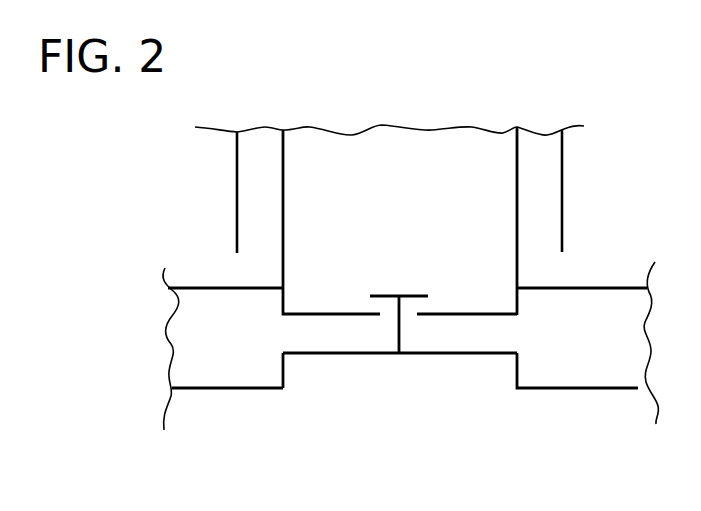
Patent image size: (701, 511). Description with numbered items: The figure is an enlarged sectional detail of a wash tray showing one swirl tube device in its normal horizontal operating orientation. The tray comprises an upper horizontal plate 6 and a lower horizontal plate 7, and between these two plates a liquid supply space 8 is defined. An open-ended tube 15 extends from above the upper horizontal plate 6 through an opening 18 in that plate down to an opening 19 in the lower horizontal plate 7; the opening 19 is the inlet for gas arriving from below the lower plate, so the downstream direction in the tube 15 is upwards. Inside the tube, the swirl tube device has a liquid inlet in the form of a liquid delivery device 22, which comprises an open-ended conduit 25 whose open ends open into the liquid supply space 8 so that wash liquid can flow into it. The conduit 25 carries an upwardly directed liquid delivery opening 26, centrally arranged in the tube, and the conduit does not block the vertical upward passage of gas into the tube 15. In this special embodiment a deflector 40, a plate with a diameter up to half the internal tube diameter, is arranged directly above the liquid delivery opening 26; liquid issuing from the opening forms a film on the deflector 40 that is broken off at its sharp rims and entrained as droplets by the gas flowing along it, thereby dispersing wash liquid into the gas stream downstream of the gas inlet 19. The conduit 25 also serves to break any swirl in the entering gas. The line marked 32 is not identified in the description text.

The upper horizontal plate 6 is at (210, 287).
The lower horizontal plate 7 is at (228, 389).
The liquid supply space 8 is at (240, 352).
The open-ended tube 15 is at (284, 193).
The opening 18 is at (515, 287).
The opening 19 is at (509, 388).
The liquid delivery device 22 is at (431, 355).
The open-ended conduit 25 is at (340, 327).
The liquid delivery opening 26 is at (405, 313).
The inner wall 32 is at (235, 182).
The deflector 40 is at (409, 294).